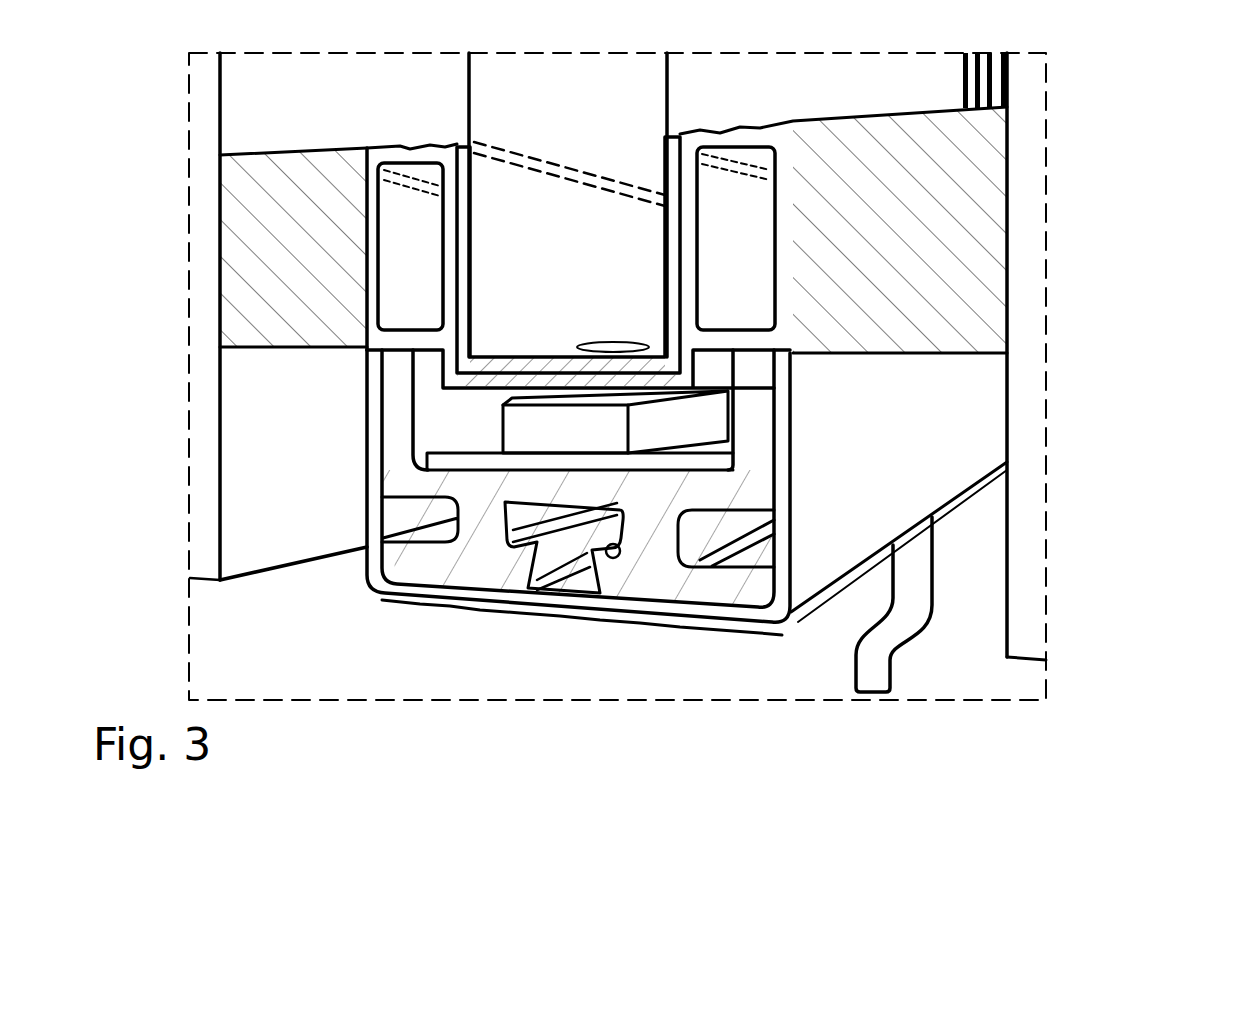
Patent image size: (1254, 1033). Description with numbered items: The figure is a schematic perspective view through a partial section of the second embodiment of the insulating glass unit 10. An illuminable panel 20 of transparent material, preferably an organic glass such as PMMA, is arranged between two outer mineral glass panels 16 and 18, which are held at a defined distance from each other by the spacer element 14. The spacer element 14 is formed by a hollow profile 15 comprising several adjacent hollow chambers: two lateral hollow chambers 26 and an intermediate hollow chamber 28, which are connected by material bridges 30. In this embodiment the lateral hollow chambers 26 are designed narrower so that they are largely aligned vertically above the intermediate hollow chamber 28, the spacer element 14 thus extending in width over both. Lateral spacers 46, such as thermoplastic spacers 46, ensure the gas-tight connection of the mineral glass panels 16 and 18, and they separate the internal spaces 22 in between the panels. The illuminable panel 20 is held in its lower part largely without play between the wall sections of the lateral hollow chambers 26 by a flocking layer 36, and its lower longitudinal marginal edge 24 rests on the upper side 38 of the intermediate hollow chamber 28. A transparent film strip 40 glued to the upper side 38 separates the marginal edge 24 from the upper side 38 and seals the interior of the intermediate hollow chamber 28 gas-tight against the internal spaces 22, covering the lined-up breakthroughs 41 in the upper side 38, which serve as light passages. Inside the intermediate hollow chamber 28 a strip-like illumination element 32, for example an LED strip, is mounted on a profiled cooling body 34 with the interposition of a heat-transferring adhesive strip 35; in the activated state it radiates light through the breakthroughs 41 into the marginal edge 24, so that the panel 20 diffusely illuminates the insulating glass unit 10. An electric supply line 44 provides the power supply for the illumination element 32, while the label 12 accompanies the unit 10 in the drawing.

The insulating glass unit 10 is at (617, 450).
The frame assembly 12 is at (708, 725).
The spacer element 14 is at (894, 640).
The hollow profile 15 is at (808, 660).
The mineral glass panel 16 is at (189, 209).
The mineral glass panel 18 is at (1012, 224).
The illuminable panel 20 is at (559, 119).
The internal space in between panels 22 is at (329, 119).
The lower longitudinal marginal edge 24 is at (549, 345).
The lateral hollow chamber 26 is at (397, 259).
The intermediate hollow chamber 28 is at (580, 594).
The material bridge 30 is at (385, 340).
The illumination element 32 is at (569, 448).
The cooling body 34 is at (639, 586).
The heat-transferring adhesive strip 35 is at (443, 462).
The flocking layer 36 is at (667, 188).
The upper side 38 is at (468, 378).
The transparent film strip 40 is at (499, 363).
The breakthrough 41 is at (614, 335).
The electric supply line 44 is at (877, 655).
The lateral spacer 46 is at (240, 315).